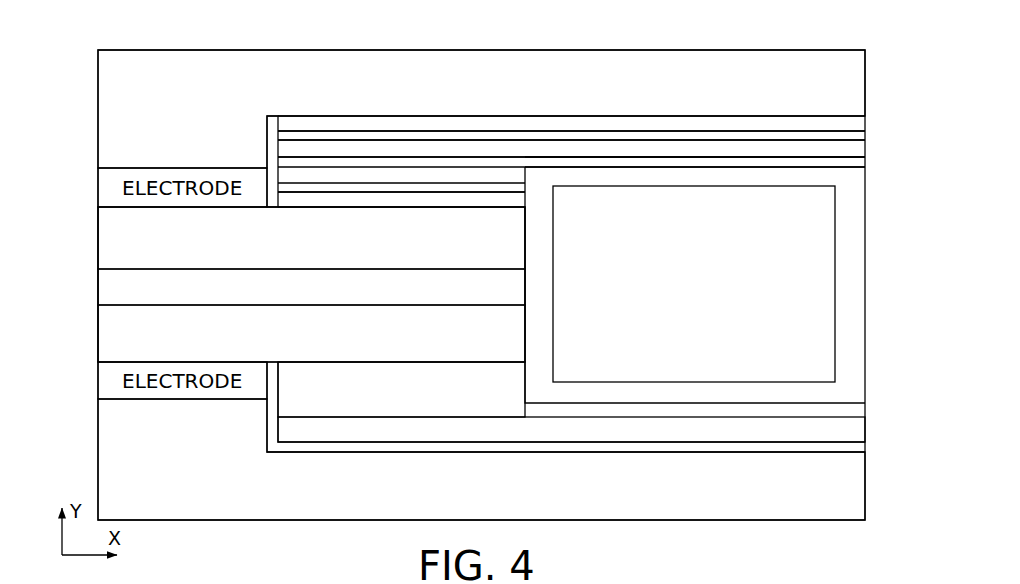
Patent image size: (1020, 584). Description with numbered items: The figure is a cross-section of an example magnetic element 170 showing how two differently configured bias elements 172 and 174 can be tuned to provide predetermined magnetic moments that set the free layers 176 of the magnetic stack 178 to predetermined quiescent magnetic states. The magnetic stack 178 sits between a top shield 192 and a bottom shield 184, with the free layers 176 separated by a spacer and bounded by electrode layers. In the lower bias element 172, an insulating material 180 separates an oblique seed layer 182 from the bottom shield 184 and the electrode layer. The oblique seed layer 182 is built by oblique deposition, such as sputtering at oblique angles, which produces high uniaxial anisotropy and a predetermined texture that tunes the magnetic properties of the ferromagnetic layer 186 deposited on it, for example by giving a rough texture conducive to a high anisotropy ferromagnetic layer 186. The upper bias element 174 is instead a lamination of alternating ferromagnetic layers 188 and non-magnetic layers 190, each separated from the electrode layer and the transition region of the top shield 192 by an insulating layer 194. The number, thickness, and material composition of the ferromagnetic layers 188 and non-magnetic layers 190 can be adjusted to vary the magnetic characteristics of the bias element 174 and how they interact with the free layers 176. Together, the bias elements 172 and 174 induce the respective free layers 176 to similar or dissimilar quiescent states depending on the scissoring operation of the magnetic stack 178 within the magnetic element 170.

The magnetic element 170 is at (755, 45).
The bias element 172 is at (866, 402).
The bias element 174 is at (866, 167).
The free layers 176 is at (311, 284).
The magnetic stack 178 is at (97, 318).
The insulating material 180 is at (363, 449).
The oblique seed layer 182 is at (571, 429).
The bottom shield 184 is at (481, 459).
The ferromagnetic layer 186 is at (285, 399).
The ferromagnetic layers 188 is at (667, 106).
The non-magnetic layers 190 is at (457, 183).
The top shield 192 is at (481, 109).
The insulating layer 194 is at (266, 155).